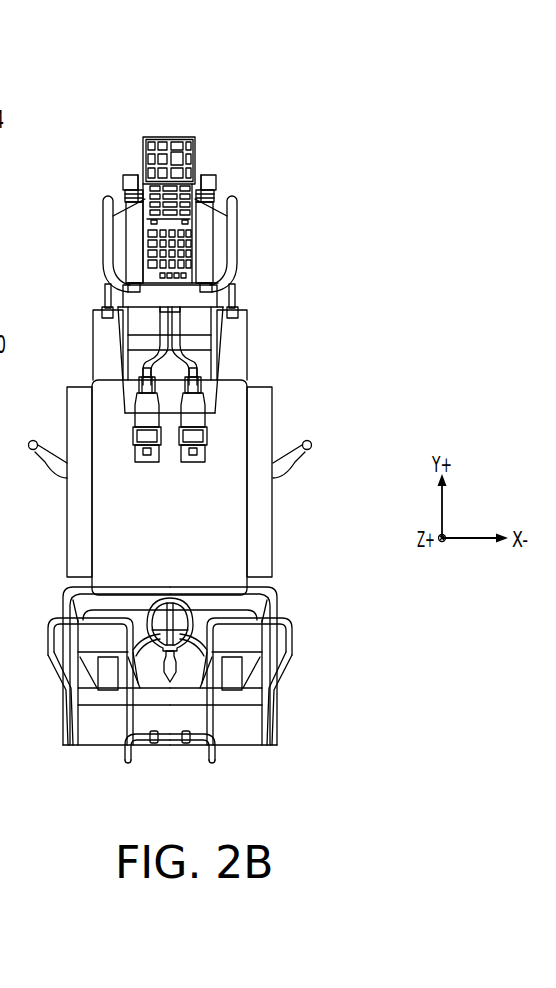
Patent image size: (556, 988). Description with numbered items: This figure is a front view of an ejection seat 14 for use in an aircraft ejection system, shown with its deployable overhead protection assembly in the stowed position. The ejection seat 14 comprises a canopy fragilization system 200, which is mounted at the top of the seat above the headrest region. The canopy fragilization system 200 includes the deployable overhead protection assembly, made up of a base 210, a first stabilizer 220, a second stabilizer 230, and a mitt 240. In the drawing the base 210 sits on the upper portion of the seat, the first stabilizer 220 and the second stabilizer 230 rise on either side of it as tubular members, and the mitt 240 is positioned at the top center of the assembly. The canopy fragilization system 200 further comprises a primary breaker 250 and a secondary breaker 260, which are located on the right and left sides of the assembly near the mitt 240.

The canopy fragilization system 200 is at (455, 92).
The ejection seat 14 is at (312, 326).
The base 210 is at (168, 294).
The first stabilizer 220 is at (235, 231).
The second stabilizer 230 is at (110, 236).
The mitt 240 is at (150, 152).
The primary breaker 250 is at (206, 173).
The secondary breaker 260 is at (124, 182).